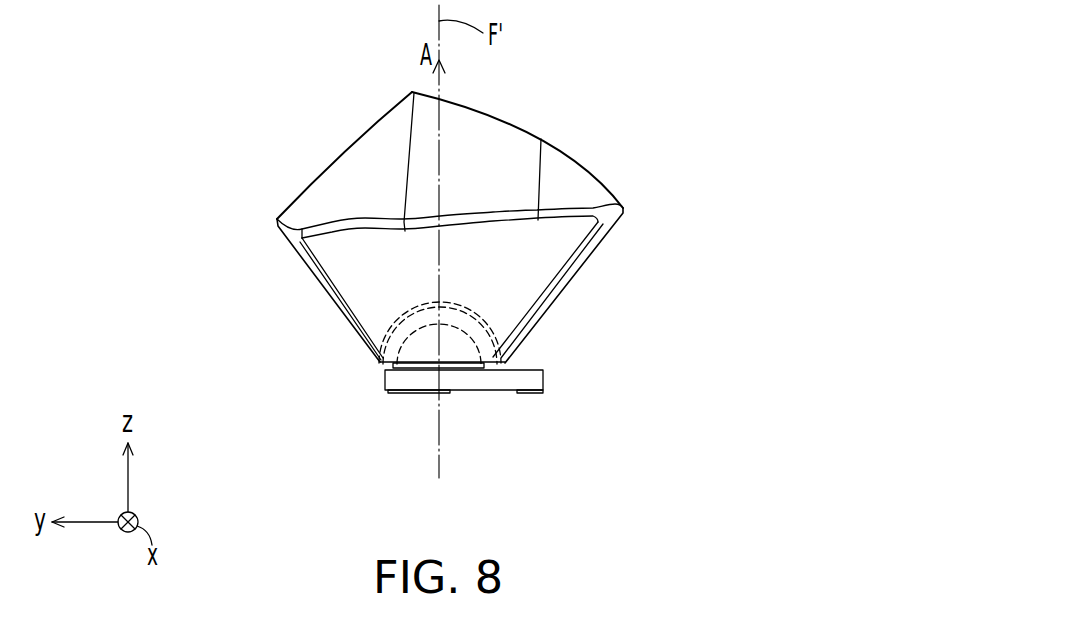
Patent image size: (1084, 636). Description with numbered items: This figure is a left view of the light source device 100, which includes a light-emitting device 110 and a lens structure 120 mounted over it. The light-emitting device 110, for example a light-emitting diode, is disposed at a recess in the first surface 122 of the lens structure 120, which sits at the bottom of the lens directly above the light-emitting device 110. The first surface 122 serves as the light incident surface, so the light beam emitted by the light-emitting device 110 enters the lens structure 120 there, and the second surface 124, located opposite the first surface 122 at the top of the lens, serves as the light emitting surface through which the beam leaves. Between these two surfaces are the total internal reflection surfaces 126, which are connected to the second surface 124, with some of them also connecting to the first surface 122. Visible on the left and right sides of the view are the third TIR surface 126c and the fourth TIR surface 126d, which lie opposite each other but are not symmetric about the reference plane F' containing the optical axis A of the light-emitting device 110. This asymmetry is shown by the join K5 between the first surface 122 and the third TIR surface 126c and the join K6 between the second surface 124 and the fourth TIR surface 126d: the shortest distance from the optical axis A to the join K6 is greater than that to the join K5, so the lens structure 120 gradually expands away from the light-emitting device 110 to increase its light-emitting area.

The light source device 100 is at (778, 508).
The light-emitting device 110 is at (533, 382).
The lens structure 120 is at (468, 215).
The first surface 122 is at (402, 327).
The second surface 124 is at (388, 133).
The total internal reflection surfaces 126 is at (437, 285).
The third TIR surface 126c is at (313, 270).
The fourth TIR surface 126d is at (577, 266).
The join of the first surface and the third TIR surface K5 is at (378, 362).
The join of the second surface and the fourth TIR surface K6 is at (596, 204).